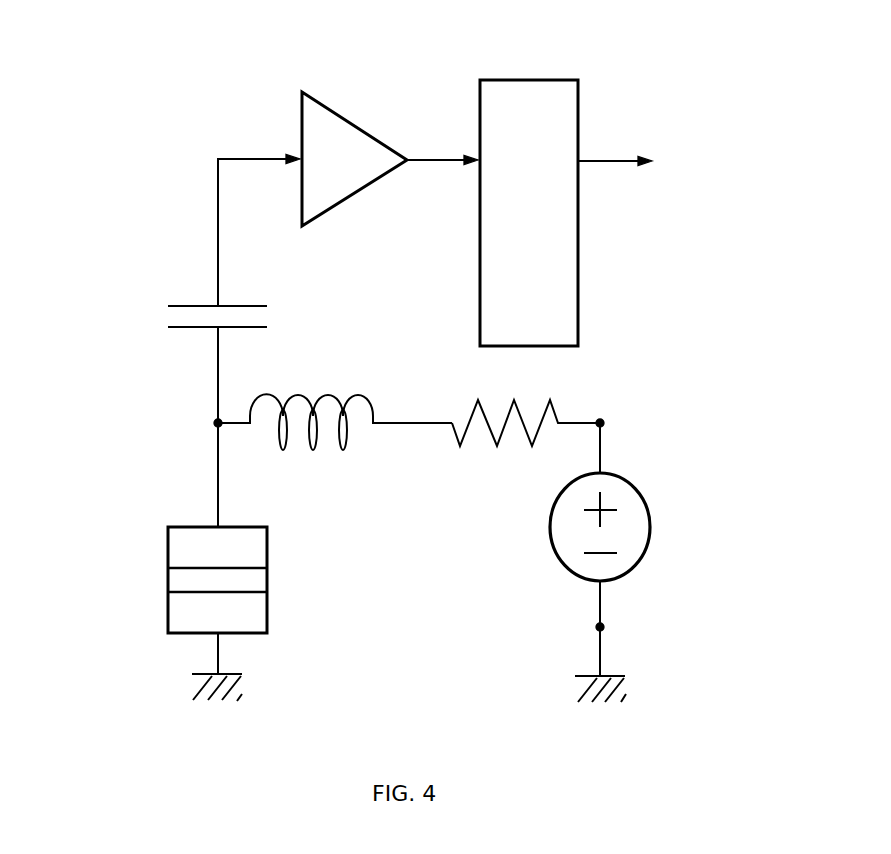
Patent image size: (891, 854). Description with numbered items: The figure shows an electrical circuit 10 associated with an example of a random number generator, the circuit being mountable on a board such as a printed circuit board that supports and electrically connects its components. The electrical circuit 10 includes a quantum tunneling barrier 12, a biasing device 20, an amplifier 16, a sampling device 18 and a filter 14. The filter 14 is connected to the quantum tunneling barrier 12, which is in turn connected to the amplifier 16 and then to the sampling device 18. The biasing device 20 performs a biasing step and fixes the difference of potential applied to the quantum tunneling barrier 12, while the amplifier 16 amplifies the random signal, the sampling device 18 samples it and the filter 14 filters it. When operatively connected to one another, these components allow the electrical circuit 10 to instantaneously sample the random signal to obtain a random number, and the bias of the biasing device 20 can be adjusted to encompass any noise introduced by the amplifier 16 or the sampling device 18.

The electrical circuit 10 is at (760, 143).
The quantum tunneling barrier 12 is at (203, 579).
The filter 14 is at (595, 386).
The amplifier 16 is at (353, 128).
The sampling device 18 is at (579, 271).
The biasing device 20 is at (655, 481).